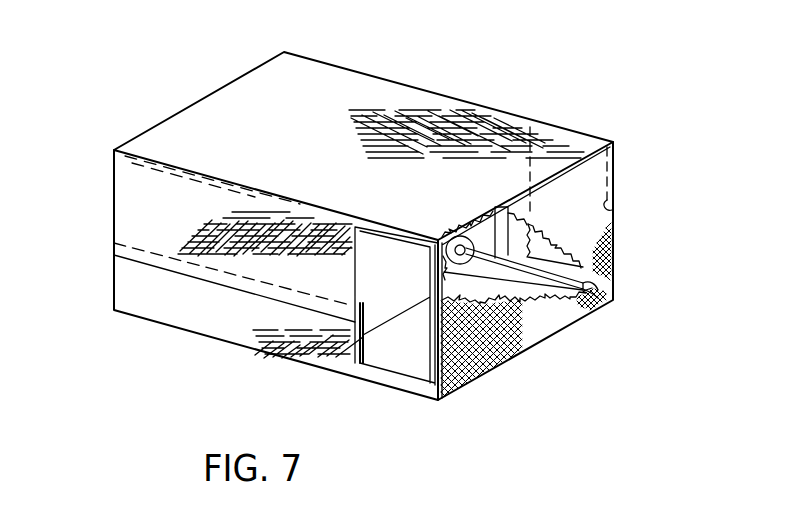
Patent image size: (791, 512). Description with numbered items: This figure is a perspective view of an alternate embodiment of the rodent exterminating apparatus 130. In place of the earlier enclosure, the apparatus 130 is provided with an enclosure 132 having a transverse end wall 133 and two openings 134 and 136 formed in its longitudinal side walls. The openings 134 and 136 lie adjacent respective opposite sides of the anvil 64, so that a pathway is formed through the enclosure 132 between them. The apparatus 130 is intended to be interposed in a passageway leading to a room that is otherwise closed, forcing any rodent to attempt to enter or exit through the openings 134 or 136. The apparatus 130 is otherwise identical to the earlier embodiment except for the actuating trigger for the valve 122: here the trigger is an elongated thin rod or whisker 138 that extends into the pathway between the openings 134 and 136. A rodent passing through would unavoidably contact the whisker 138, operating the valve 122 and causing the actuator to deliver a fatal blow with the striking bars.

The rodent exterminating apparatus 130 is at (450, 82).
The enclosure 132 is at (106, 229).
The anvil 64 is at (397, 352).
The opening 134 is at (362, 296).
The valve 122 is at (459, 235).
The transverse end wall 133 is at (537, 328).
The opening 136 is at (613, 214).
The whisker 138 is at (604, 299).